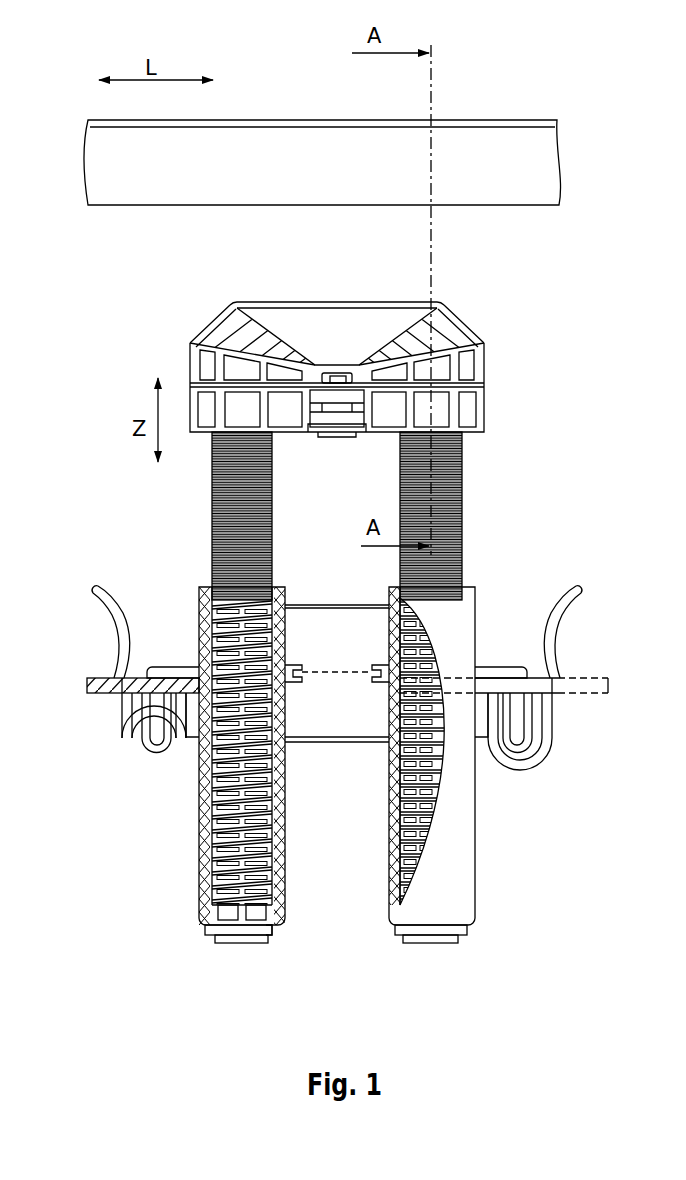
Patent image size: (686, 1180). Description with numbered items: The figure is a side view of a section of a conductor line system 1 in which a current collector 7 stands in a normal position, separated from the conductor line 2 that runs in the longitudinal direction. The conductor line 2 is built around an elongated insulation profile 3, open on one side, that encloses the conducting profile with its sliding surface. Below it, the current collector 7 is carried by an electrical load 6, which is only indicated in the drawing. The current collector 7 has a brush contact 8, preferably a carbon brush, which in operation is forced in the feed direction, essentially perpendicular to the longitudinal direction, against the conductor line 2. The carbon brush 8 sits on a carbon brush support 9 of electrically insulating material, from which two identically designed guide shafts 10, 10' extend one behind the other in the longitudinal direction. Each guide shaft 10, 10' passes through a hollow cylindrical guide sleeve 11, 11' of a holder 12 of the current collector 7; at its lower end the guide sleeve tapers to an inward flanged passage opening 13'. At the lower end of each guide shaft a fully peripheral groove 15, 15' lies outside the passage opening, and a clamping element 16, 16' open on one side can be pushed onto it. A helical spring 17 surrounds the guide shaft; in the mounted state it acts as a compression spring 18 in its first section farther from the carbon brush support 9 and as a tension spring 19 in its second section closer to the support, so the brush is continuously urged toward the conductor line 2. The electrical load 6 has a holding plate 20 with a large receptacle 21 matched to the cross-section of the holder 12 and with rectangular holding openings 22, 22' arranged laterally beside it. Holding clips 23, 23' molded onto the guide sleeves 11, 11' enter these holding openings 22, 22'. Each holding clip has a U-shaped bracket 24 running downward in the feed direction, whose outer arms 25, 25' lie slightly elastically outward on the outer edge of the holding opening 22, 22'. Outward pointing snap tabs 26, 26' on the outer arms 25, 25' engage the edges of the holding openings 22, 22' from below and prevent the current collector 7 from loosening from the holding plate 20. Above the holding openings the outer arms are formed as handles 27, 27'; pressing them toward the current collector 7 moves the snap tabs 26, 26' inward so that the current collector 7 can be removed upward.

The conductor line system 1 is at (355, 110).
The conductor line 2 is at (512, 120).
The insulation profile 3 is at (468, 128).
The electrical load 6 is at (616, 681).
The current collector 7 is at (373, 338).
The brush contact 8 is at (343, 304).
The carbon brush support 9 is at (486, 390).
The guide shaft 10 is at (363, 843).
The guide shaft 10' is at (198, 904).
The guide sleeve 11 is at (471, 756).
The guide sleeve 11' is at (201, 756).
The holder 12 is at (436, 752).
The passage opening 13' is at (319, 958).
The groove 15 is at (478, 961).
The groove 15' is at (194, 961).
The clamping element 16 is at (475, 937).
The clamping element 16' is at (194, 936).
The helical spring 17 is at (390, 808).
The compression spring 18 is at (390, 756).
The tension spring 19 is at (467, 526).
The holding plate 20 is at (377, 679).
The receptacle 21 is at (194, 664).
The holding opening 22 is at (581, 632).
The holding opening 22' is at (93, 632).
The holding clip 23 is at (370, 679).
The holding clip 23' is at (116, 676).
The U-shaped bracket 24 is at (535, 762).
The outer arm 25 is at (558, 735).
The outer arm 25' is at (117, 735).
The snap tab 26 is at (571, 723).
The snap tab 26' is at (102, 723).
The handle 27 is at (599, 557).
The handle 27' is at (76, 557).